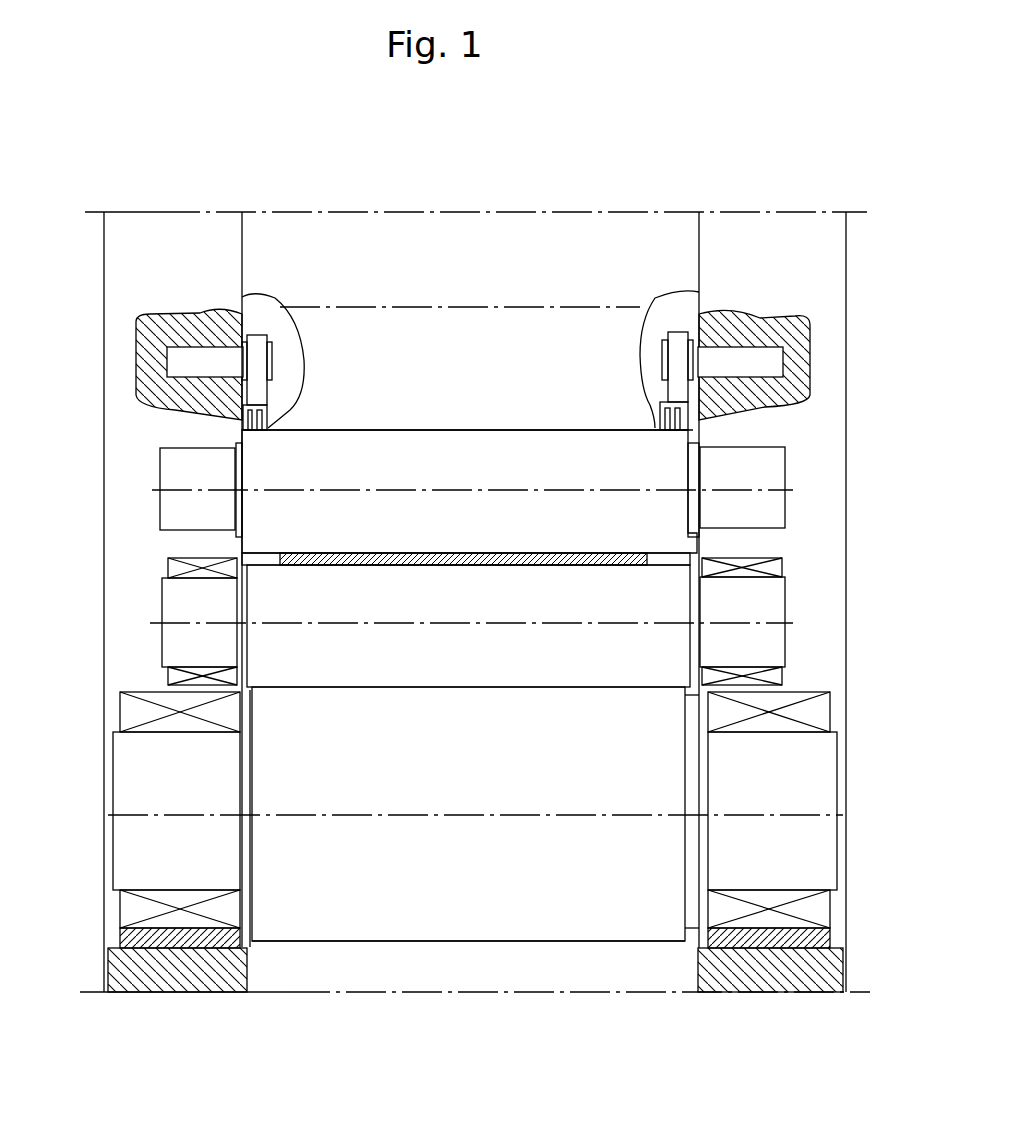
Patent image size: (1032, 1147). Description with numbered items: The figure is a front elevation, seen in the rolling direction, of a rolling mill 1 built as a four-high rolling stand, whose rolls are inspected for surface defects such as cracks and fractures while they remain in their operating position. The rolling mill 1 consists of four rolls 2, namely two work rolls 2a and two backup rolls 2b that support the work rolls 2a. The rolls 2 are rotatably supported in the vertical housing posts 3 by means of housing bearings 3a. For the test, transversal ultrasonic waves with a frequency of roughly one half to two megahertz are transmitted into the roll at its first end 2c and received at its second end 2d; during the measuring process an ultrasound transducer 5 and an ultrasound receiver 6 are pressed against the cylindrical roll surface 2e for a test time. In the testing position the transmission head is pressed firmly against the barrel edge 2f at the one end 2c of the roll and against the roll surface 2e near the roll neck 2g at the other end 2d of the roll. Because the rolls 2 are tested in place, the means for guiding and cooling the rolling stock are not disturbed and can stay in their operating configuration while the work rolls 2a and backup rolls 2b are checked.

The rolling mill 1 is at (678, 178).
The rolls 2 is at (513, 240).
The work rolls 2a is at (260, 517).
The backup rolls 2b is at (477, 941).
The first end of the roll 2c is at (252, 470).
The second end of the roll 2d is at (660, 510).
The roll surface 2e is at (375, 427).
The barrel edge 2f is at (257, 443).
The roll neck 2g is at (763, 642).
The housing posts 3 is at (152, 240).
The housing bearings 3a is at (173, 563).
The ultrasound transducer 5 is at (645, 412).
The ultrasound receiver 6 is at (297, 392).